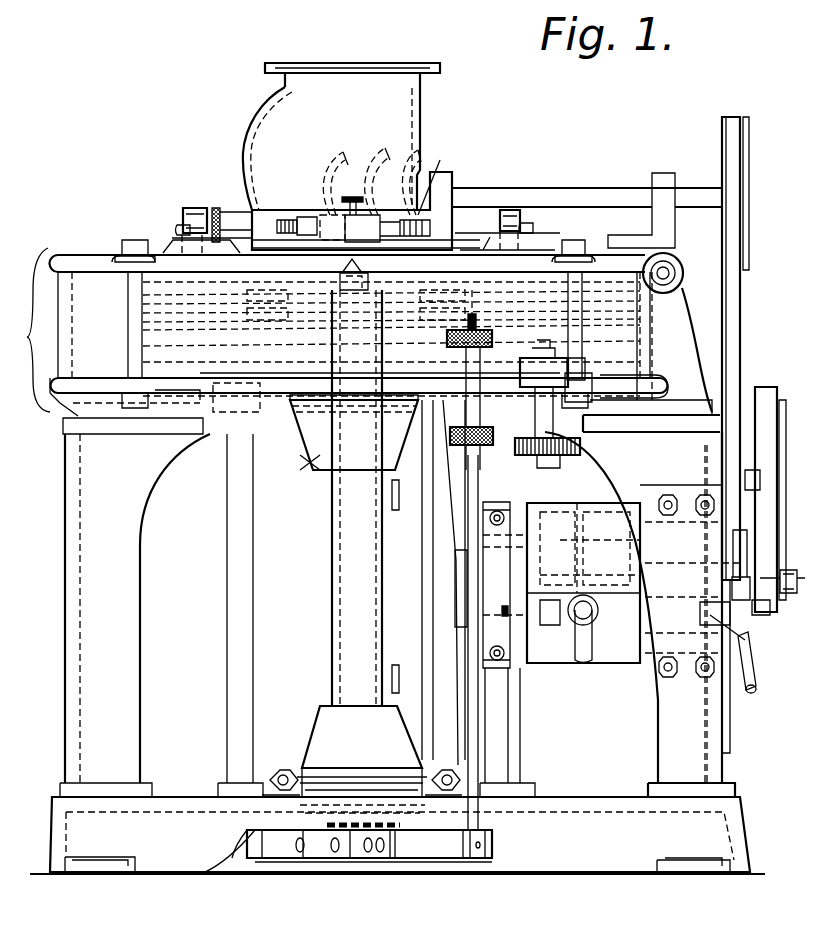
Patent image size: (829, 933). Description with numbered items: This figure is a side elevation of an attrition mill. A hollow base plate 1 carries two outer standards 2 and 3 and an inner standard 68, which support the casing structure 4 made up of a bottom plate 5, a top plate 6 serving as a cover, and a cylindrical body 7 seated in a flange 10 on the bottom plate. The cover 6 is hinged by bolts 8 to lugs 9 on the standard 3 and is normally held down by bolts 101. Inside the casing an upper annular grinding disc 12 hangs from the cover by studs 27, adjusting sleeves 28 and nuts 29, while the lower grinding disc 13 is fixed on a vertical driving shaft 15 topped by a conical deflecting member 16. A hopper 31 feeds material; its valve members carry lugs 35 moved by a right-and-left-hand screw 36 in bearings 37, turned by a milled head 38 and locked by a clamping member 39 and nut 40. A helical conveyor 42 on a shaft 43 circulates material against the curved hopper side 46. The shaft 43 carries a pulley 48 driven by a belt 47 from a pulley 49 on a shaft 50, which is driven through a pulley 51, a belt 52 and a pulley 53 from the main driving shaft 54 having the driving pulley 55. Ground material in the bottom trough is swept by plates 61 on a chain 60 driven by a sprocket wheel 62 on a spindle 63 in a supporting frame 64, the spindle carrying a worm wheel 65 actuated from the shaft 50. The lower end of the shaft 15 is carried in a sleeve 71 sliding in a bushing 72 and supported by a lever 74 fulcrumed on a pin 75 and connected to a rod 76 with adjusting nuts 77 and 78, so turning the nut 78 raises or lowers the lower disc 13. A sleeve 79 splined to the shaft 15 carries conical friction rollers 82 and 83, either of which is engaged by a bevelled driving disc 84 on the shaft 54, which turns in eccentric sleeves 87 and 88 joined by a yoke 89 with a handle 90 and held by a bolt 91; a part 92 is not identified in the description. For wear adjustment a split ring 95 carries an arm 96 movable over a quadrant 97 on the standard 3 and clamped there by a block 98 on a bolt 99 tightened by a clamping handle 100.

The hollow base plate 1 is at (160, 806).
The outer standard 2 is at (78, 540).
The outer standard 3 is at (730, 766).
The casing structure 4 is at (29, 330).
The bottom plate 5 is at (75, 413).
The top plate 6 is at (64, 255).
The cylindrical body 7 is at (58, 327).
The hinge bolts 8 is at (675, 262).
The lugs 9 is at (684, 312).
The flange 10 is at (55, 378).
The upper grinding disc 12 is at (128, 282).
The lower grinding disc 13 is at (128, 340).
The vertical driving shaft 15 is at (335, 512).
The conical deflecting member 16 is at (358, 265).
The studs 27 is at (200, 208).
The adjusting sleeve 28 is at (178, 227).
The nut 29 is at (183, 213).
The hopper 31 is at (362, 106).
The lug 35 is at (387, 205).
The right-and-left-hand screw 36 is at (290, 210).
The bearings 37 is at (277, 230).
The milled head 38 is at (217, 208).
The clamping member 39 is at (335, 220).
The nut 40 is at (343, 200).
The helical conveyor 42 is at (372, 170).
The conveyor shaft 43 is at (470, 190).
The curved hopper side 46 is at (257, 120).
The belt 47 is at (729, 117).
The driving pulley 48 is at (748, 120).
The pulley 49 is at (750, 488).
The shaft 50 is at (596, 448).
The pulley 51 is at (781, 426).
The belt 52 is at (765, 387).
The pulley 53 is at (760, 613).
The main driving shaft 54 is at (672, 558).
The driving pulley 55 is at (625, 667).
The chain 60 is at (580, 365).
The flights 61 is at (612, 385).
The sprocket wheel 62 is at (544, 384).
The vertical spindle 63 is at (651, 424).
The supporting frame 64 is at (547, 434).
The worm wheel 65 is at (548, 468).
The inner standard 68 is at (518, 732).
The sleeve 71 is at (408, 822).
The bushing 72 is at (418, 822).
The lever 74 is at (430, 850).
The fulcrum pin 75 is at (253, 848).
The rod 76 is at (478, 488).
The adjusting nut 77 is at (463, 447).
The adjusting nut 78 is at (460, 362).
The sleeve 79 is at (330, 556).
The friction roller 82 is at (304, 470).
The friction roller 83 is at (322, 722).
The bevelled driving disc 84 is at (448, 700).
The eccentric sleeve 87 is at (560, 560).
The eccentric sleeve 88 is at (640, 540).
The yoke 89 is at (556, 624).
The handle 90 is at (590, 652).
The bolt 91 is at (502, 612).
The stop 92 is at (510, 614).
The split ring 95 is at (744, 526).
The operating arm 96 is at (700, 672).
The quadrant 97 is at (730, 722).
The block 98 is at (703, 613).
The bolt 99 is at (753, 642).
The clamping handle 100 is at (757, 690).
The bolts 101 is at (135, 240).